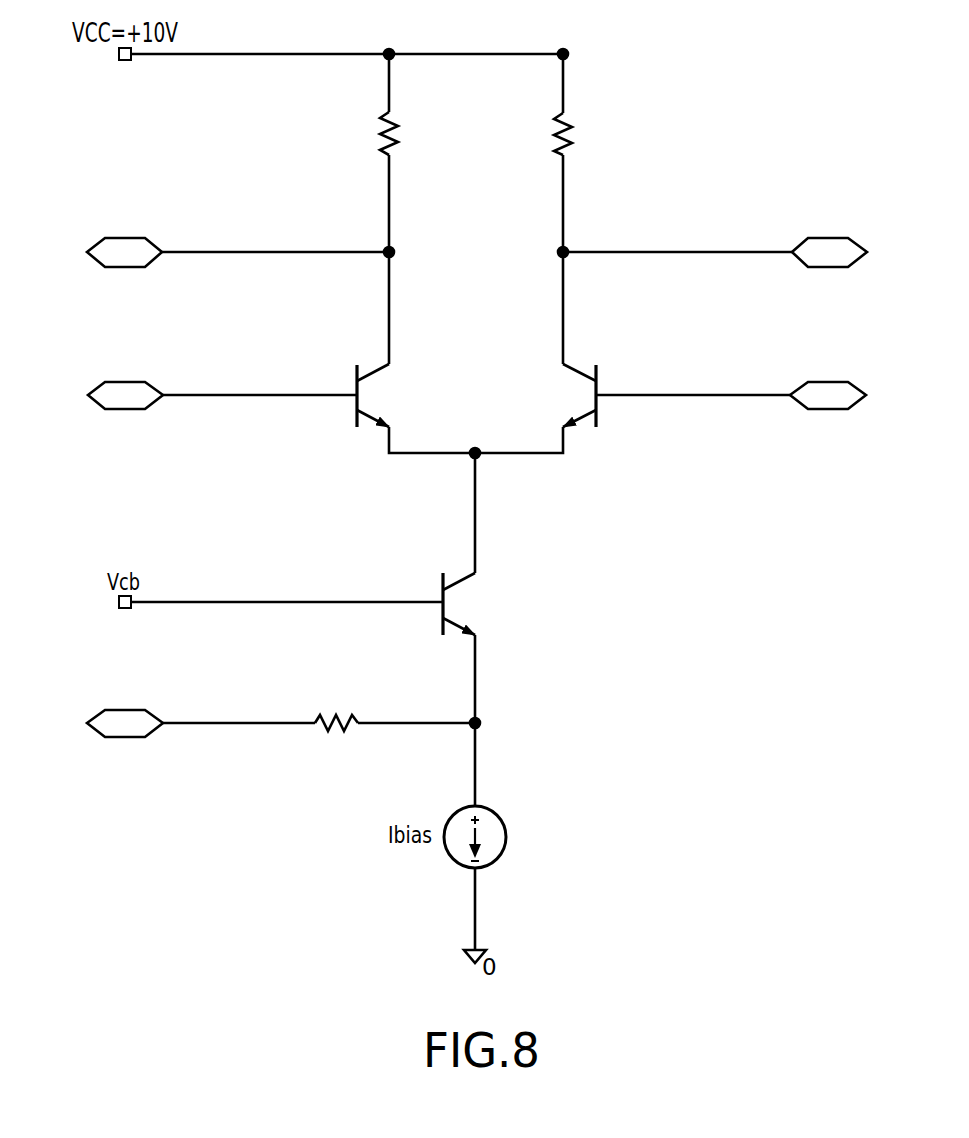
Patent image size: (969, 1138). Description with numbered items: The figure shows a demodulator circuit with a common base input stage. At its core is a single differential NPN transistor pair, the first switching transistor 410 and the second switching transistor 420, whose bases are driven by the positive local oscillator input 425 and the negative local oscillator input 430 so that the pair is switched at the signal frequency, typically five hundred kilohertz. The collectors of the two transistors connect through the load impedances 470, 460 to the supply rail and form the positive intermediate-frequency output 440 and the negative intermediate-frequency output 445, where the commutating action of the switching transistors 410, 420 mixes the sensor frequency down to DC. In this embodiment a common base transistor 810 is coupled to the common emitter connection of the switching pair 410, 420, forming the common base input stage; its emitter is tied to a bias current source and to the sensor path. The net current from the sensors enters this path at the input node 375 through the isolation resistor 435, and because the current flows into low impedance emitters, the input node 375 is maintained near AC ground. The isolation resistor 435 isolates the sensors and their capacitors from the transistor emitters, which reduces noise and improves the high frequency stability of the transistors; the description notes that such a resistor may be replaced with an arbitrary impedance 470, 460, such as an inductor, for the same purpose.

The impedance 470 is at (396, 122).
The impedance 460 is at (577, 115).
The IF+ output 440 is at (135, 238).
The IF− output 445 is at (819, 238).
The LO+ 425 is at (135, 382).
The LO− 430 is at (819, 382).
The switching transistor QswP 410 is at (390, 392).
The switching transistor QswN 420 is at (578, 390).
The common base transistor Qcb 810 is at (505, 607).
The N1 375 is at (135, 710).
The resistor Rns 435 is at (334, 734).